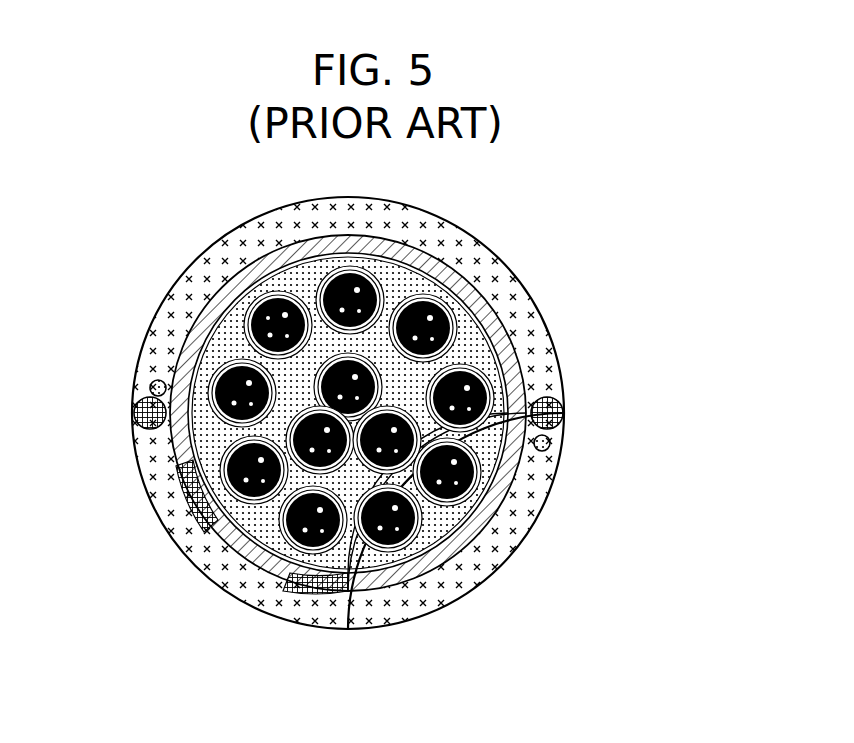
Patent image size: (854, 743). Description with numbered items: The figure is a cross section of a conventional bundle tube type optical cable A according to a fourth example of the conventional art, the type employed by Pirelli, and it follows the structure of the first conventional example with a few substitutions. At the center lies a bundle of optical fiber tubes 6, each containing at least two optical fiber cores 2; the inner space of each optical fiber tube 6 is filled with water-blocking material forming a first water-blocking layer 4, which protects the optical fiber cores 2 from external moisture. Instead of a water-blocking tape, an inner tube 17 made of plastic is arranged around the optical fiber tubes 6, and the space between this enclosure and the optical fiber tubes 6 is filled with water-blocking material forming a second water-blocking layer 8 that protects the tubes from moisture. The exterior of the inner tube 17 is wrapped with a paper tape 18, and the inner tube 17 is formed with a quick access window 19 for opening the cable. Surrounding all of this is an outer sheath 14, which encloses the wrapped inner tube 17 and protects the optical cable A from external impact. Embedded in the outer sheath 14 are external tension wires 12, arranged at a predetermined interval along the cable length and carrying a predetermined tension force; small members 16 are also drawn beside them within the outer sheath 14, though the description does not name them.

The optical fiber core 2 is at (276, 298).
The first water-blocking layer 4 is at (227, 286).
The optical fiber tube 6 is at (405, 242).
The second water-blocking layer 8 is at (187, 336).
The external tension wire 12 is at (564, 413).
The outer sheath 14 is at (455, 590).
The ripcord 16 is at (548, 450).
The inner tube 17 is at (478, 548).
The paper tape 18 is at (512, 503).
The quick access window 19 is at (343, 597).
The optical cable A is at (504, 249).